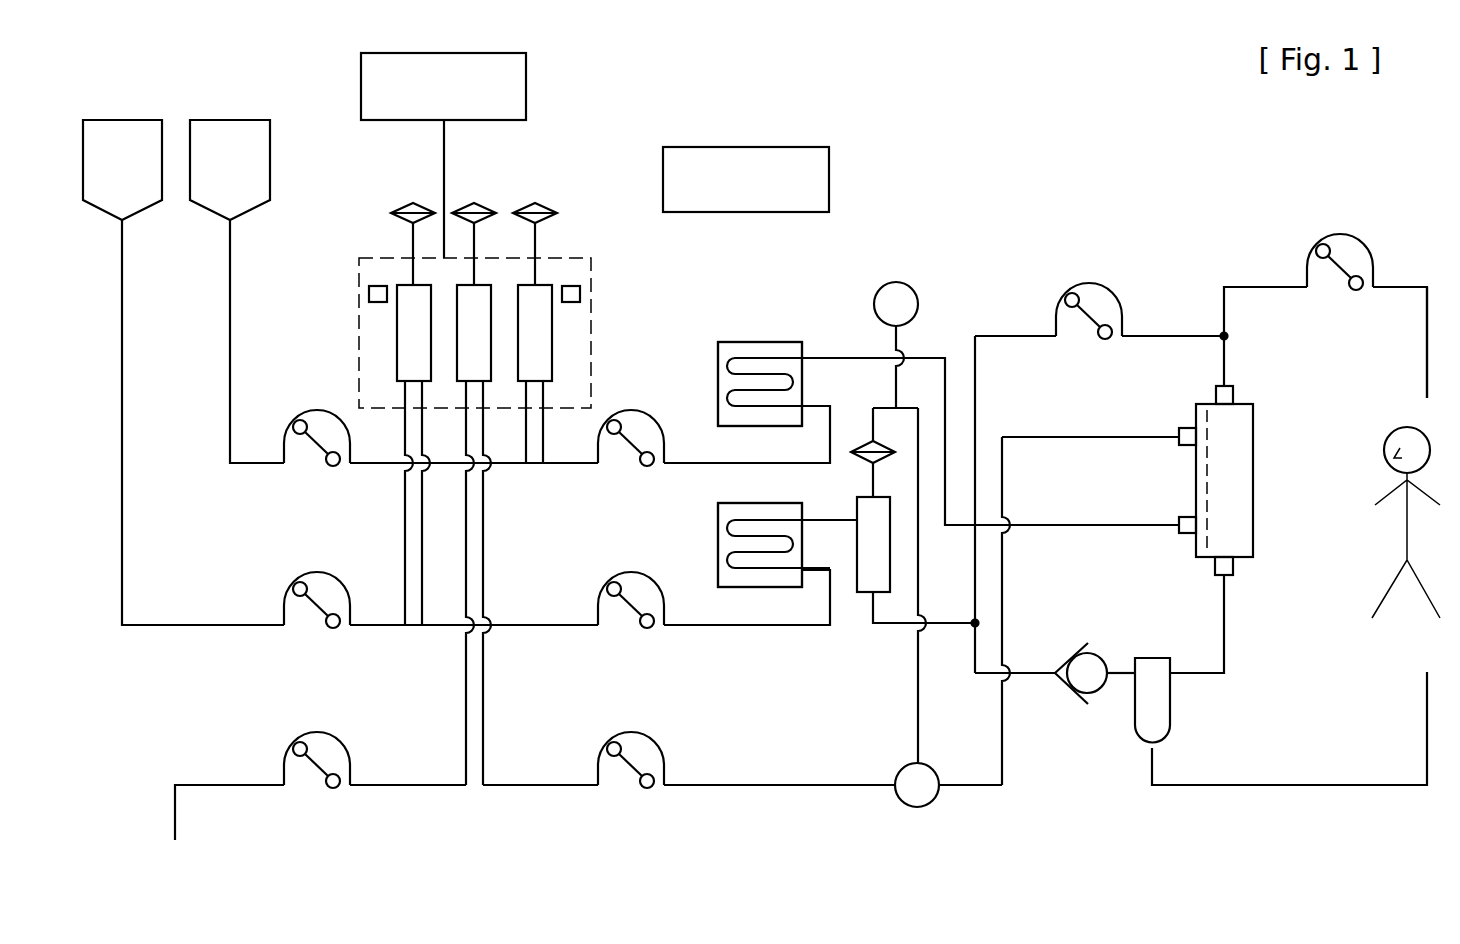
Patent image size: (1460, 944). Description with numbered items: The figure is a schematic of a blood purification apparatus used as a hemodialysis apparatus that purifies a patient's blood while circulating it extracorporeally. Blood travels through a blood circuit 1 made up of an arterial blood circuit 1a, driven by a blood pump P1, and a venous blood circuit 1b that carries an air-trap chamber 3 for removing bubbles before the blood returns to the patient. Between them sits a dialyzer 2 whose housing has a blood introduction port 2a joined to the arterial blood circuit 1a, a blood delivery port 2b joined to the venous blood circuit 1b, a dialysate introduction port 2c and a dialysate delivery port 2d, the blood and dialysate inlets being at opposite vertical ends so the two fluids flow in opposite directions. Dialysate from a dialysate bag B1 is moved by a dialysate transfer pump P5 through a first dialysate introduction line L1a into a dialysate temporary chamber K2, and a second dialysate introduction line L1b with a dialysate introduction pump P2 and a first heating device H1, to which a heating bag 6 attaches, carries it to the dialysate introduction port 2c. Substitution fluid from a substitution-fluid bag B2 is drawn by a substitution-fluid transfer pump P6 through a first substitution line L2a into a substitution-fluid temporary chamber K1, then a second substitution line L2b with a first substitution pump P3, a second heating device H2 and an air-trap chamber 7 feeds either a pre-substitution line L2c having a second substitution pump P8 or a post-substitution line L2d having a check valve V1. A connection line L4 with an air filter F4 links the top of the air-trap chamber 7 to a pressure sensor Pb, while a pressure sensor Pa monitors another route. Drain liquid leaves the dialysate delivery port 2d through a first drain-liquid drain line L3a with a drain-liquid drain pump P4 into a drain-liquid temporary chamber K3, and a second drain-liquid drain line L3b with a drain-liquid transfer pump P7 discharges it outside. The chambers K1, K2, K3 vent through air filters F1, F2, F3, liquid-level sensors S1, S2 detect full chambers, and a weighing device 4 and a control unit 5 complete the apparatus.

The blood circuit 1 is at (1256, 260).
The arterial blood circuit 1a is at (1426, 285).
The venous blood circuit 1b is at (1359, 792).
The dialyzer 2 is at (1270, 474).
The blood introduction port 2a is at (1233, 395).
The blood delivery port 2b is at (1221, 578).
The dialysate introduction port 2c is at (1186, 535).
The dialysate delivery port 2d is at (1185, 426).
The air-trap chamber 3 is at (1170, 712).
The weighing device 4 is at (526, 72).
The control unit 5 is at (829, 190).
The heating bag 6 is at (750, 360).
The air-trap chamber 7 is at (890, 553).
The dialysate bag B1 is at (237, 291).
The substitution-fluid bag B2 is at (183, 372).
The air filter F1 is at (400, 208).
The air filter F2 is at (478, 208).
The air filter F3 is at (538, 208).
The air filter F4 is at (890, 447).
The first heating device H1 is at (718, 355).
The second heating device H2 is at (718, 562).
The substitution-fluid temporary chamber K1 is at (397, 333).
The dialysate temporary chamber K2 is at (552, 365).
The drain-liquid temporary chamber K3 is at (457, 360).
The first dialysate introduction line L1a is at (374, 470).
The second dialysate introduction line L1b is at (555, 470).
The first substitution line L2a is at (374, 632).
The second substitution line L2b is at (744, 632).
The pre-substitution line L2c is at (977, 378).
The post-substitution line L2d is at (1036, 672).
The first drain-liquid drain line L3a is at (986, 792).
The second drain-liquid drain line L3b is at (407, 792).
The connection line L4 is at (917, 694).
The blood pump P1 is at (1371, 222).
The dialysate introduction pump P2 is at (636, 482).
The first substitution pump P3 is at (636, 644).
The drain-liquid drain pump P4 is at (636, 804).
The dialysate transfer pump P5 is at (320, 482).
The substitution-fluid transfer pump P6 is at (320, 644).
The drain-liquid transfer pump P7 is at (320, 804).
The second substitution pump P8 is at (1110, 270).
The pressure sensor Pa is at (917, 785).
The pressure sensor Pb is at (895, 361).
The liquid-level sensor S1 is at (369, 294).
The liquid-level sensor S2 is at (580, 294).
The check valve V1 is at (1093, 652).